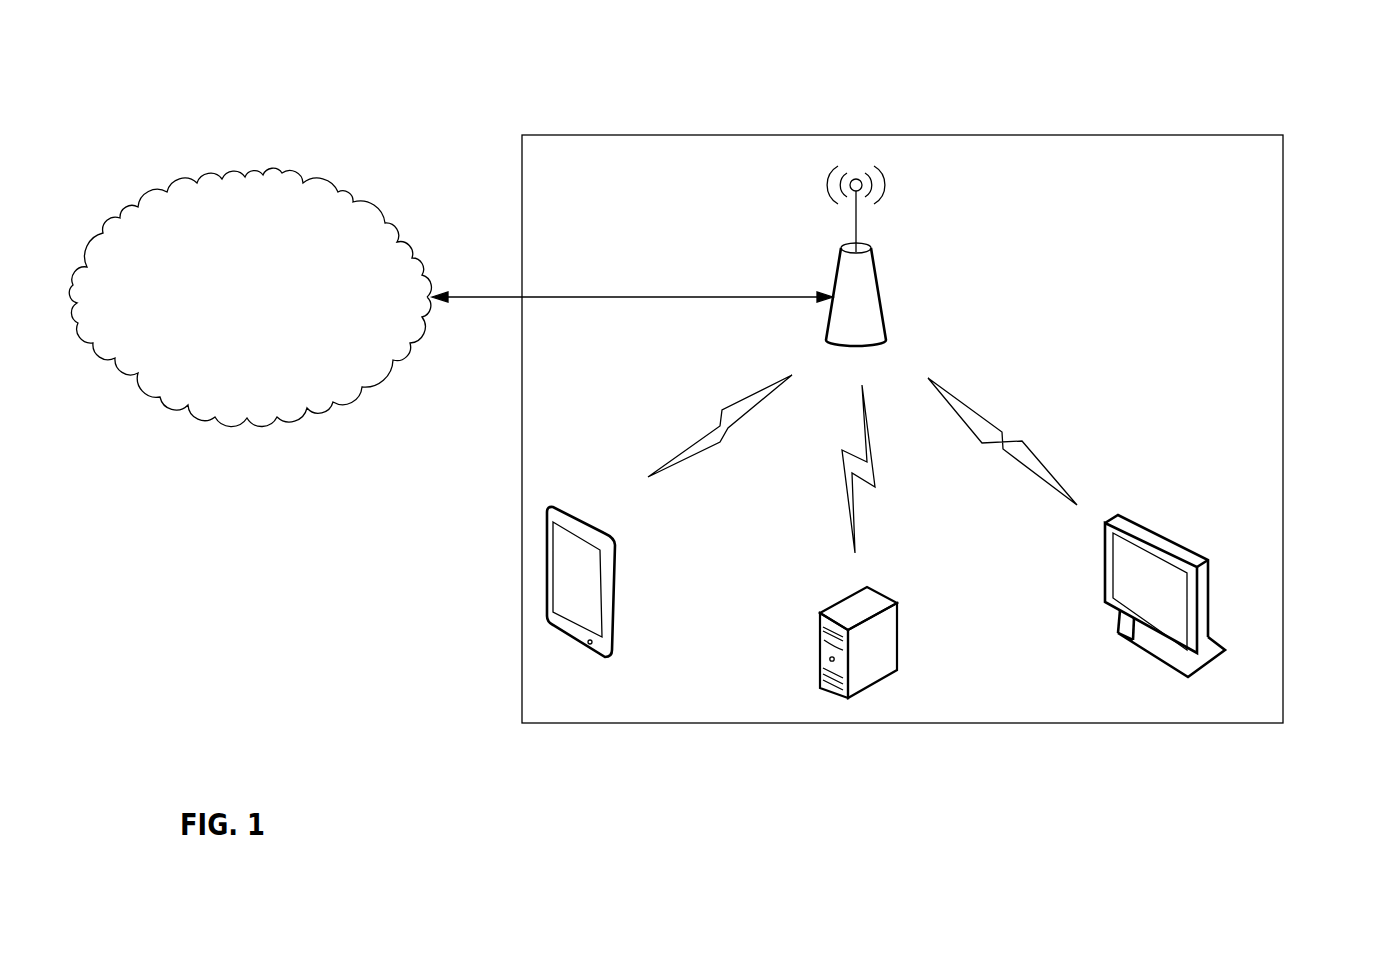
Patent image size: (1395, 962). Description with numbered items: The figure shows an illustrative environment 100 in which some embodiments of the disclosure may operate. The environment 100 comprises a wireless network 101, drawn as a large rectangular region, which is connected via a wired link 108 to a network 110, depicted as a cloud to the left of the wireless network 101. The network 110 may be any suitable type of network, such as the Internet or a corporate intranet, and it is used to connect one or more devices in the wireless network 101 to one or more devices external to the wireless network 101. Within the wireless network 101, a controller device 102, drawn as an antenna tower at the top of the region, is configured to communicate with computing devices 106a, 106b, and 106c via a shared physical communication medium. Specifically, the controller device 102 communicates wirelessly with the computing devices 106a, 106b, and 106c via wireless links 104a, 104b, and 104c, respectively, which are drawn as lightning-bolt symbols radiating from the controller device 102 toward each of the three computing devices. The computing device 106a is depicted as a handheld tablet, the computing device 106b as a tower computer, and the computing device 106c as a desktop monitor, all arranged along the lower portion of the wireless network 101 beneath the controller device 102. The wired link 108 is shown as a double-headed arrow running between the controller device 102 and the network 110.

The illustrative environment 100 is at (1318, 78).
The wireless network 101 is at (1283, 250).
The controller device 102 is at (880, 273).
The wireless link 104a is at (720, 442).
The wireless link 104b is at (876, 467).
The wireless link 104c is at (980, 403).
The computing device 106a is at (615, 540).
The computing device 106b is at (897, 603).
The computing device 106c is at (1208, 567).
The wired link 108 is at (538, 297).
The network 110 is at (277, 173).